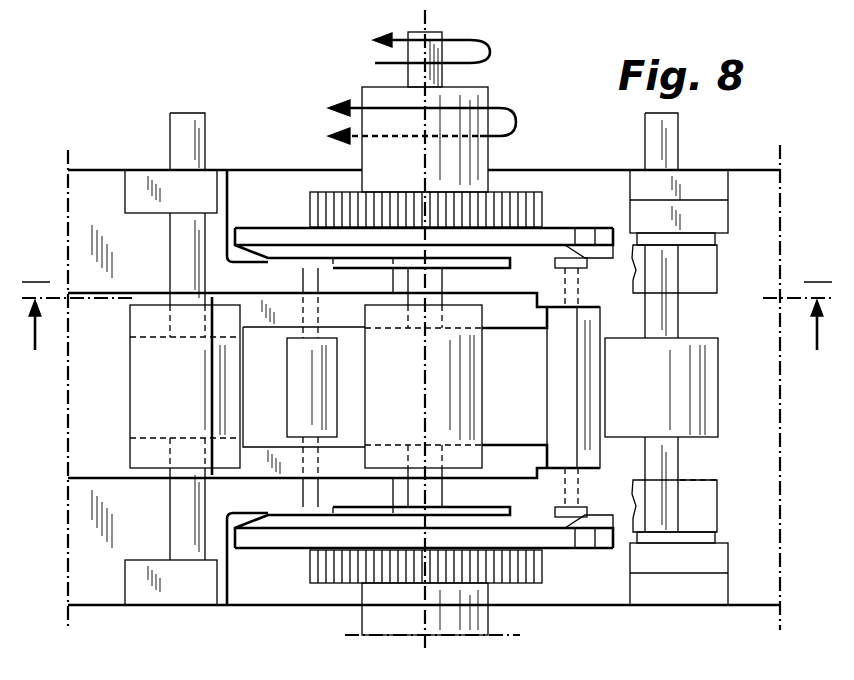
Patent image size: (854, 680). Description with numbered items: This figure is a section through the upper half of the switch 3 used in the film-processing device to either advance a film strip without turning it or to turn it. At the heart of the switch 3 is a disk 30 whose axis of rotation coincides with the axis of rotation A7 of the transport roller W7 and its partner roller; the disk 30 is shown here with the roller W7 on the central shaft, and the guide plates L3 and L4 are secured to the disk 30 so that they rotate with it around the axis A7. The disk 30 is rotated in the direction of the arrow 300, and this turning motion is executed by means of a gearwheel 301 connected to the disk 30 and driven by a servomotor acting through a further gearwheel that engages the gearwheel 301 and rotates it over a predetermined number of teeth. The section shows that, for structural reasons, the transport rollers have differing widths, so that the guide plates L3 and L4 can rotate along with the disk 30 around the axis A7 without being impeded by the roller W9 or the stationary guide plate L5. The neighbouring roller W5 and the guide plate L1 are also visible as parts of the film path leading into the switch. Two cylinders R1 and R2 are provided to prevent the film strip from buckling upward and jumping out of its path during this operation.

The switch 3 is at (126, 116).
The disk 30 is at (260, 232).
The arrow 300 is at (488, 113).
The gearwheel 301 is at (511, 205).
The axis of rotation A7 is at (430, 17).
The guide plate L1 is at (290, 270).
The guide plate L3 is at (257, 320).
The guide plate L4 is at (558, 258).
The guide plate L5 is at (710, 265).
The transport roller W5 is at (150, 388).
The transport roller W7 is at (463, 405).
The transport roller W9 is at (695, 375).
The cylinder R1 is at (318, 368).
The cylinder R2 is at (560, 368).